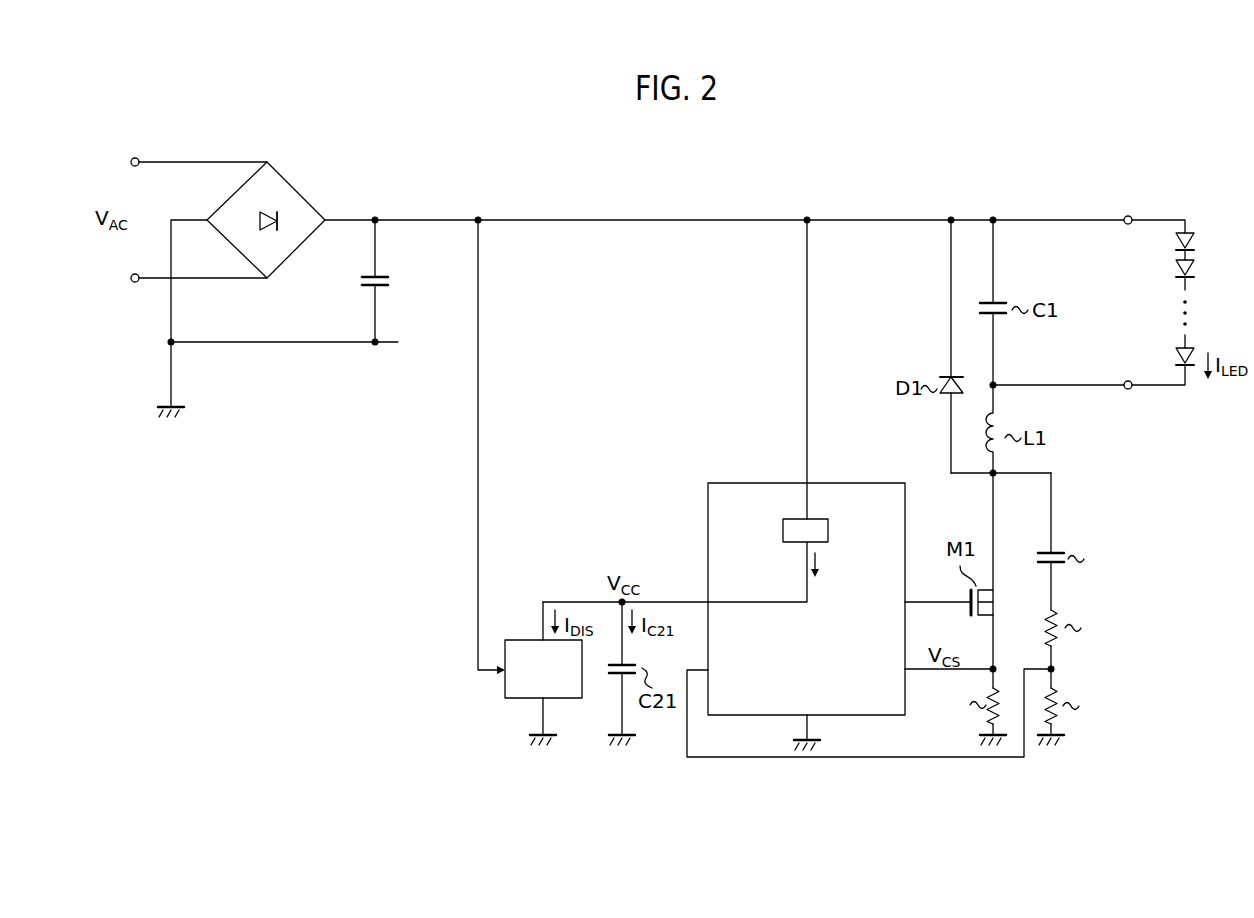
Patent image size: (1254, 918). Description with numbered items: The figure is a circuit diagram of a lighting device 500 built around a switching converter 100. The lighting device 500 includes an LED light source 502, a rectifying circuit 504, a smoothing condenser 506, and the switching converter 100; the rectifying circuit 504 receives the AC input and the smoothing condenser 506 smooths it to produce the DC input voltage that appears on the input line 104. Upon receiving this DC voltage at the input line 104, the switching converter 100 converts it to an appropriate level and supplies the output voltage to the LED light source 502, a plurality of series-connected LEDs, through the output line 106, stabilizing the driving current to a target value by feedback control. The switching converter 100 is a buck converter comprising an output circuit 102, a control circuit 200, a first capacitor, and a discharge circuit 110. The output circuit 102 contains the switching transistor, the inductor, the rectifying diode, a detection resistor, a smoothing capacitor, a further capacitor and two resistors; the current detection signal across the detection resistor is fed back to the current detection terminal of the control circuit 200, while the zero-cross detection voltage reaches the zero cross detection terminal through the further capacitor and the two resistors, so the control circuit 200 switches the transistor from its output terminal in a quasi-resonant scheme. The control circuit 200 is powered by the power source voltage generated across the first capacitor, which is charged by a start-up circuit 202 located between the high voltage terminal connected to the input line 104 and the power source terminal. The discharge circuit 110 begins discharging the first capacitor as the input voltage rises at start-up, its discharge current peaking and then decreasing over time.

The switching converter 100 is at (1095, 808).
The output circuit 102 is at (1095, 768).
The input line 104 is at (853, 218).
The output line 106 is at (1045, 382).
The discharge circuit 110 is at (505, 686).
The control circuit 200 is at (806, 575).
The start-up circuit 202 is at (832, 531).
The lighting device 500 is at (1178, 138).
The LED light source 502 is at (1202, 297).
The rectifying circuit 504 is at (290, 177).
The smoothing condenser 506 is at (393, 284).